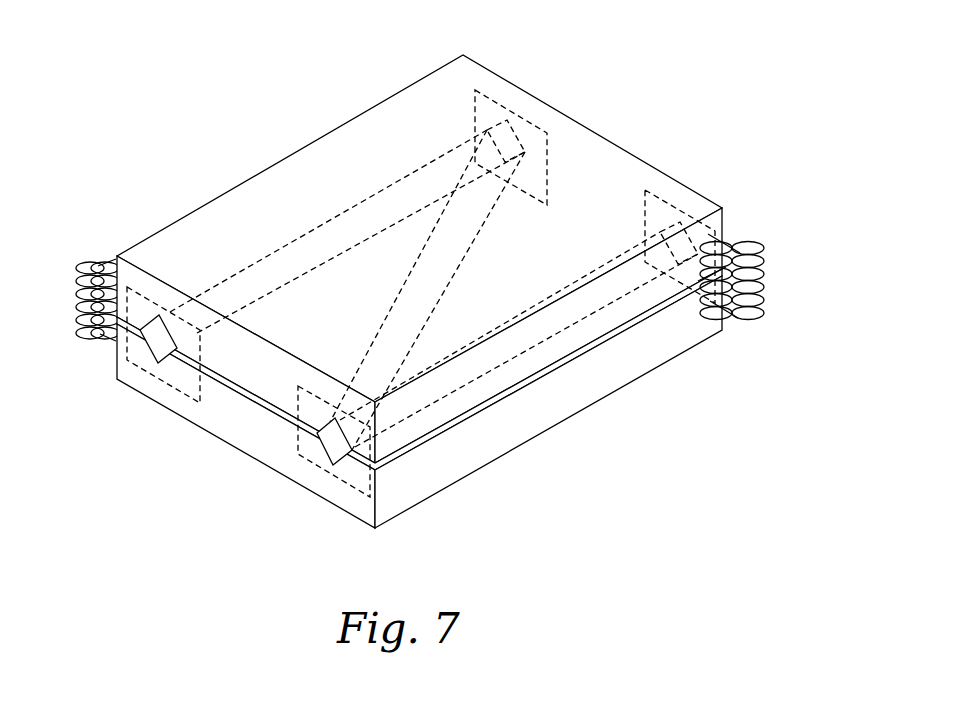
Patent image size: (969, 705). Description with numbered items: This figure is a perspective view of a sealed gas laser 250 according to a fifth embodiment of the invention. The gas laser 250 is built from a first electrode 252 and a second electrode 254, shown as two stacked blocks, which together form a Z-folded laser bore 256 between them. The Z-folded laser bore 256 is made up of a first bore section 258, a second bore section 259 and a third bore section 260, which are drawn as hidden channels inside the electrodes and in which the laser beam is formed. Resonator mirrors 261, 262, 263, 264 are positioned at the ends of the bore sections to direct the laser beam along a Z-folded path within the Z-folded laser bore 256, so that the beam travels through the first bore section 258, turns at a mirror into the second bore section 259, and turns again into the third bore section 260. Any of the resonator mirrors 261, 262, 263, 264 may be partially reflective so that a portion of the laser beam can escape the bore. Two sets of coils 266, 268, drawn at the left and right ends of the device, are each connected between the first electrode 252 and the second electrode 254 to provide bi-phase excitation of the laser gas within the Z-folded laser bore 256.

The gas laser 250 is at (732, 43).
The first electrode 252 is at (167, 232).
The second electrode 254 is at (473, 460).
The Z-folded laser bore 256 is at (150, 352).
The first bore section 258 is at (293, 238).
The second bore section 259 is at (462, 262).
The third bore section 260 is at (581, 325).
The resonator mirror 261 is at (174, 388).
The resonator mirror 262 is at (548, 137).
The resonator mirror 263 is at (298, 437).
The resonator mirror 264 is at (690, 206).
The set of coils 266 is at (80, 308).
The set of coils 268 is at (763, 278).